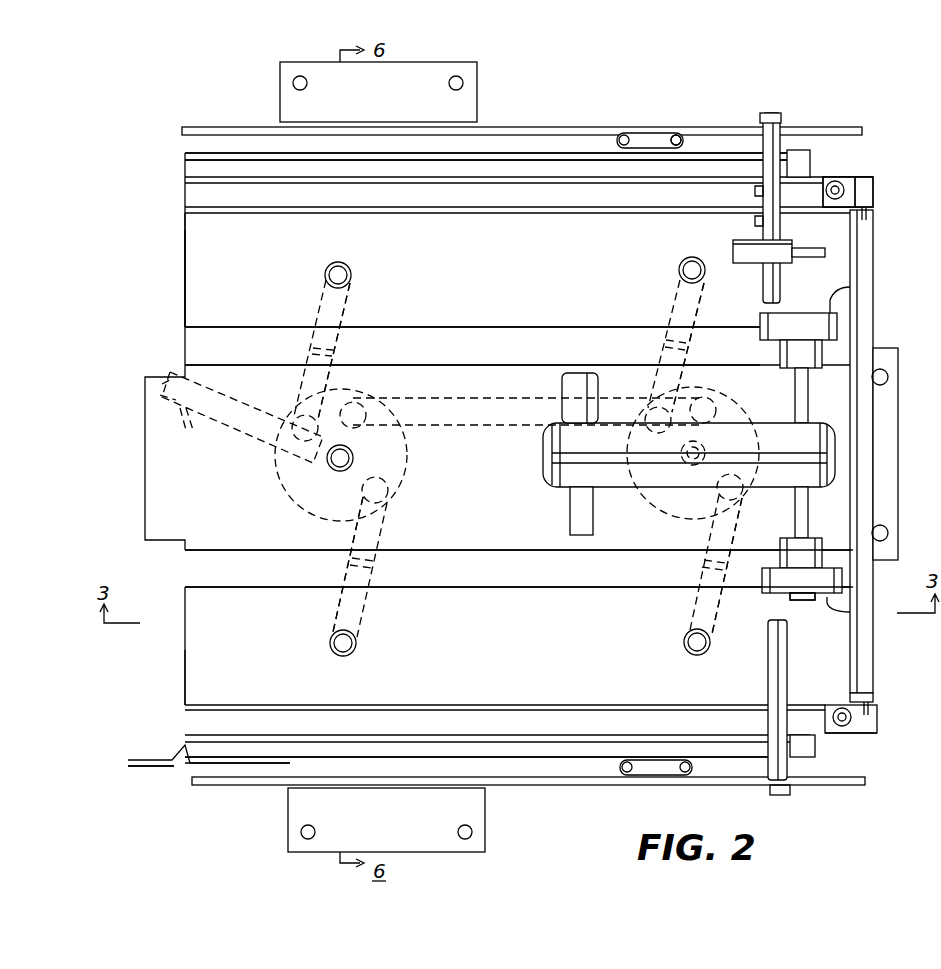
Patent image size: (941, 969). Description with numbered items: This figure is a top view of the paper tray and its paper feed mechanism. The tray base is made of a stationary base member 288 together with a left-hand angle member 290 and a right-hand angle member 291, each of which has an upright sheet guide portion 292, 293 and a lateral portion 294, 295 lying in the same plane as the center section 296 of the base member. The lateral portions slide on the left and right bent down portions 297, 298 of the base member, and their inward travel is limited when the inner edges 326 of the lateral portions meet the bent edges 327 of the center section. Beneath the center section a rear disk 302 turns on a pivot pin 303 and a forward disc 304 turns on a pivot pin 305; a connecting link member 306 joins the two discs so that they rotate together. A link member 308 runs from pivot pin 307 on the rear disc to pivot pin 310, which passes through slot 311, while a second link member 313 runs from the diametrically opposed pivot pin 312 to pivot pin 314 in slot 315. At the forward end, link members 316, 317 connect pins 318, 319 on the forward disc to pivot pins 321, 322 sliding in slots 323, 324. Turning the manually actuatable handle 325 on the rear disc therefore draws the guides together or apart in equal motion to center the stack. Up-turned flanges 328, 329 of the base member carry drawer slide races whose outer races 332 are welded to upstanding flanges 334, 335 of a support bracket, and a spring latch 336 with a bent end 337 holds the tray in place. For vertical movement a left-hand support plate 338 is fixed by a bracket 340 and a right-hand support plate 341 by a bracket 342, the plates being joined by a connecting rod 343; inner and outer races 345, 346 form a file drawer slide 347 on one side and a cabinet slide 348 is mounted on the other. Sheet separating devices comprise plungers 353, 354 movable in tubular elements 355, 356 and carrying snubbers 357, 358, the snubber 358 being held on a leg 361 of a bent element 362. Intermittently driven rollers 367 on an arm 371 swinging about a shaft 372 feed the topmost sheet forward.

The stationary base member 288 is at (190, 588).
The left-hand angle member 290 is at (185, 243).
The right-hand angle member 291 is at (185, 672).
The upright sheet guide portion 292 is at (185, 210).
The upright sheet guide portion 293 is at (200, 705).
The lateral portion 294 is at (195, 268).
The lateral portion 295 is at (200, 630).
The center section 296 is at (150, 455).
The left side bent down portion 297 is at (185, 335).
The right side bent down portion 298 is at (190, 568).
The disk 302 is at (282, 495).
The pivot pin 303 is at (353, 452).
The second disc 304 is at (648, 498).
The pivot pin 305 is at (692, 468).
The connecting link member 306 is at (474, 398).
The pivot pin 307 is at (296, 412).
The link member 308 is at (312, 300).
The pivot pin 310 is at (345, 263).
The slot 311 is at (358, 282).
The pivot pin 312 is at (388, 490).
The second link member 313 is at (388, 512).
The pivot pin 314 is at (330, 645).
The slot 315 is at (328, 617).
The link member 316 is at (690, 340).
The link member 317 is at (700, 566).
The pin 318 is at (645, 432).
The pin 319 is at (743, 498).
The pivot pin 321 is at (680, 268).
The pivot pin 322 is at (684, 648).
The slot 323 is at (702, 284).
The slot 324 is at (680, 626).
The manually actuatable handle 325 is at (200, 405).
The inner edges 326 is at (380, 330).
The bent edges 327 is at (455, 365).
The up-turned flange 328 is at (185, 185).
The up-turned flange 329 is at (200, 735).
The outer races 332 is at (185, 163).
The upstanding flange 334 is at (354, 153).
The upstanding flange 335 is at (370, 760).
The spring latch 336 is at (158, 768).
The bent end 337 is at (175, 750).
The left-hand support plate 338 is at (554, 127).
The bracket 340 is at (477, 72).
The right-hand support plate 341 is at (585, 786).
The bracket 342 is at (485, 815).
The connecting rod 343 is at (790, 772).
The inner race 345 is at (655, 155).
The outer race 346 is at (650, 133).
The file drawer slide 347 is at (683, 140).
The cabinet slide 348 is at (690, 775).
The plunger 353 is at (845, 178).
The plunger 354 is at (877, 722).
The tubular element 355 is at (830, 180).
The tubular element 356 is at (860, 734).
The snubber 357 is at (853, 236).
The snubber 358 is at (874, 696).
The leg 361 is at (866, 212).
The bent element 362 is at (873, 183).
The intermittently driven rollers 367 is at (795, 600).
The arm 371 is at (770, 423).
The shaft 372 is at (570, 513).